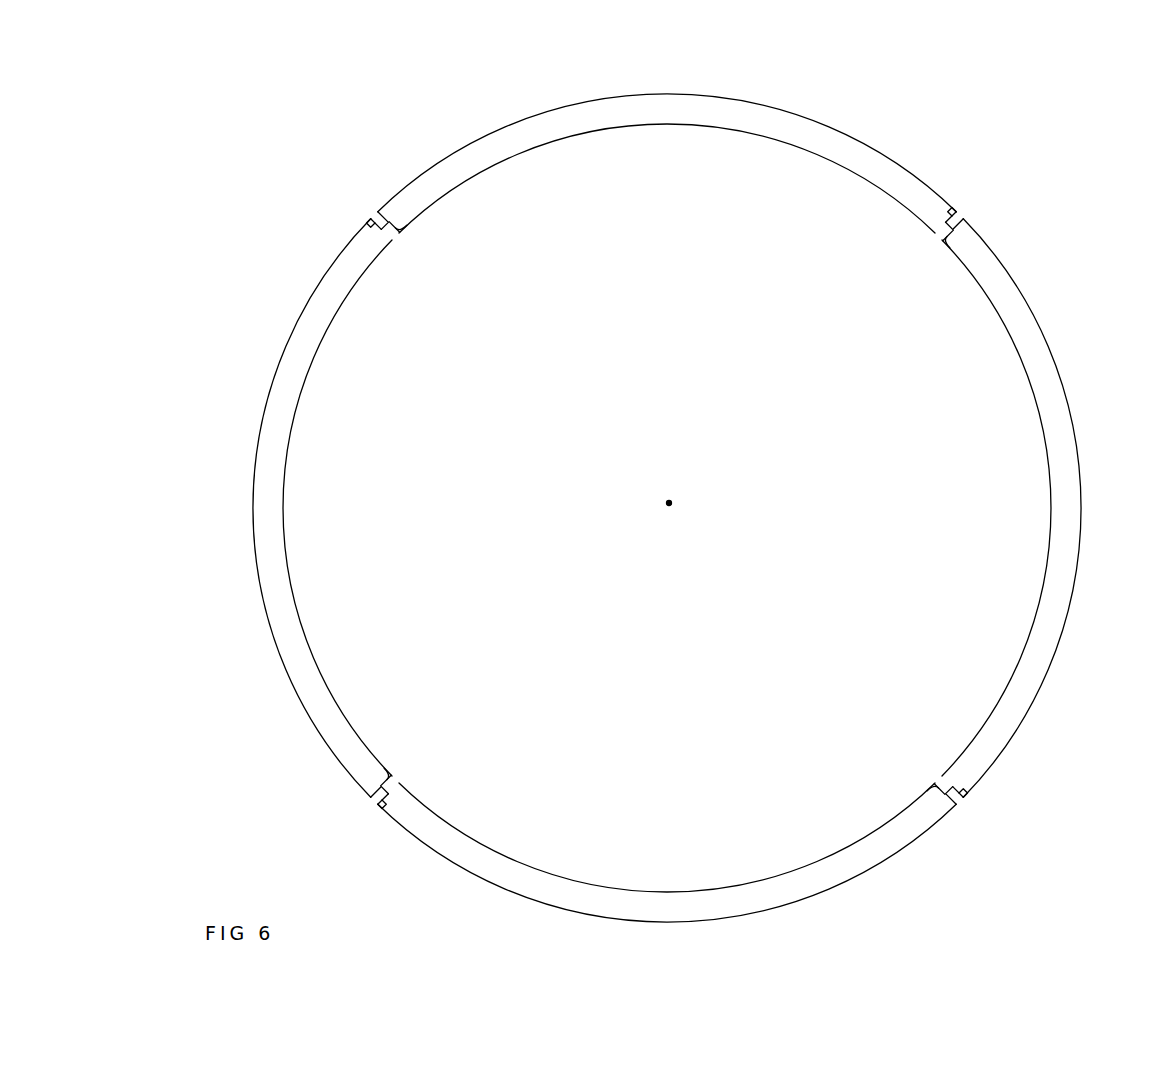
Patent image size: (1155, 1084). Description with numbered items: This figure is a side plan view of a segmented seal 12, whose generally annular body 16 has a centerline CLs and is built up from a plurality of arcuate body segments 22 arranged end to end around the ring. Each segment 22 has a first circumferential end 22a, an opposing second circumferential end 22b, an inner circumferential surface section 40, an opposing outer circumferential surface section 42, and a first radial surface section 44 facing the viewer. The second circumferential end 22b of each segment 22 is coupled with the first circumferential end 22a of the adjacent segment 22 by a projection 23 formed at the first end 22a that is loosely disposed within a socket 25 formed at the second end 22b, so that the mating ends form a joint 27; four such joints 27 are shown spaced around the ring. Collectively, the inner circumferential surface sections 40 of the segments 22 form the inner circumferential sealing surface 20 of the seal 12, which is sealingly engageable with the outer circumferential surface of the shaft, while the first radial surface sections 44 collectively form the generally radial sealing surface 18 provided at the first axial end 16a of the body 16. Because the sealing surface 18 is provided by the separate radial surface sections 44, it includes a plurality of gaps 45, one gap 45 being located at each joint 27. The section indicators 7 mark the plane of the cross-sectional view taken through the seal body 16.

The section line 7- 7 is at (677, 88).
The seal 12 is at (222, 244).
The annular body 16 is at (243, 611).
The first axial end 16a is at (296, 668).
The radial sealing surface 18 is at (277, 455).
The sealing surface 20 is at (641, 889).
The arcuate body segment 22 is at (840, 139).
The first circumferential end 22a is at (408, 218).
The second circumferential end 22b is at (363, 237).
The projection 23 is at (372, 216).
The socket 25 is at (389, 241).
The joint 27 is at (407, 241).
The inner circumferential surface section 40 is at (491, 168).
The outer circumferential surface section 42 is at (503, 128).
The first radial surface section 44 is at (531, 145).
The gap 45 is at (392, 214).
The centerline CLs is at (670, 500).